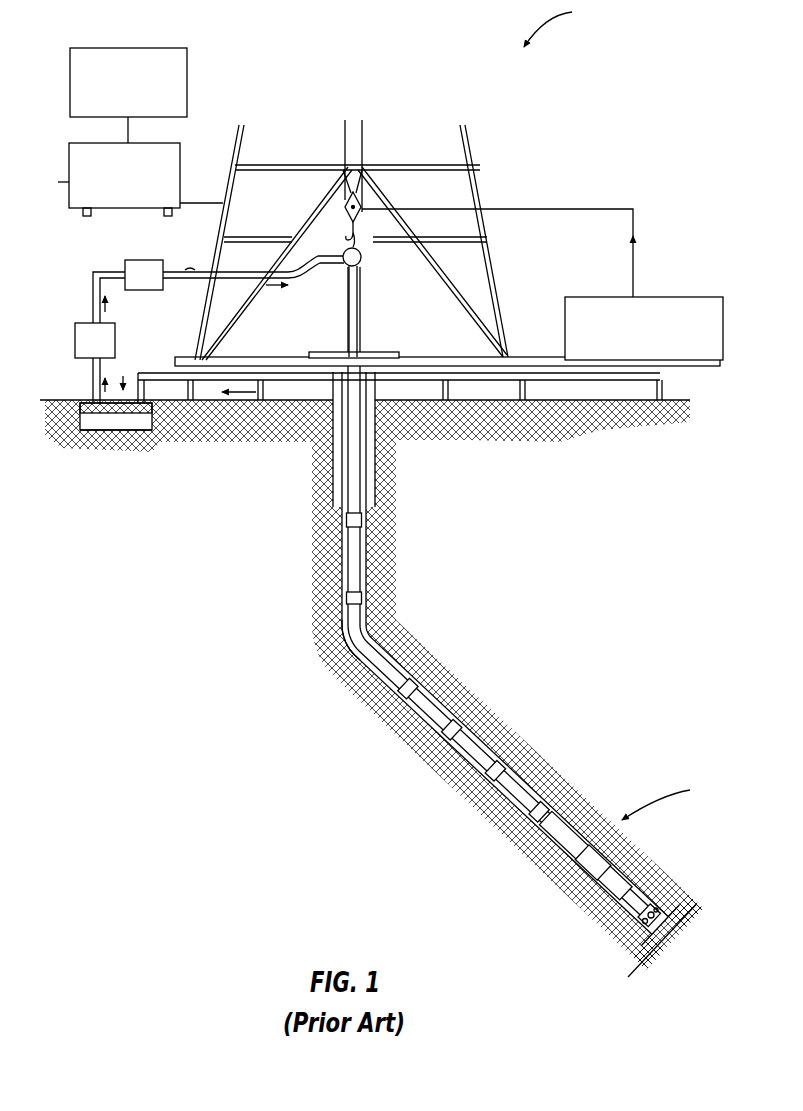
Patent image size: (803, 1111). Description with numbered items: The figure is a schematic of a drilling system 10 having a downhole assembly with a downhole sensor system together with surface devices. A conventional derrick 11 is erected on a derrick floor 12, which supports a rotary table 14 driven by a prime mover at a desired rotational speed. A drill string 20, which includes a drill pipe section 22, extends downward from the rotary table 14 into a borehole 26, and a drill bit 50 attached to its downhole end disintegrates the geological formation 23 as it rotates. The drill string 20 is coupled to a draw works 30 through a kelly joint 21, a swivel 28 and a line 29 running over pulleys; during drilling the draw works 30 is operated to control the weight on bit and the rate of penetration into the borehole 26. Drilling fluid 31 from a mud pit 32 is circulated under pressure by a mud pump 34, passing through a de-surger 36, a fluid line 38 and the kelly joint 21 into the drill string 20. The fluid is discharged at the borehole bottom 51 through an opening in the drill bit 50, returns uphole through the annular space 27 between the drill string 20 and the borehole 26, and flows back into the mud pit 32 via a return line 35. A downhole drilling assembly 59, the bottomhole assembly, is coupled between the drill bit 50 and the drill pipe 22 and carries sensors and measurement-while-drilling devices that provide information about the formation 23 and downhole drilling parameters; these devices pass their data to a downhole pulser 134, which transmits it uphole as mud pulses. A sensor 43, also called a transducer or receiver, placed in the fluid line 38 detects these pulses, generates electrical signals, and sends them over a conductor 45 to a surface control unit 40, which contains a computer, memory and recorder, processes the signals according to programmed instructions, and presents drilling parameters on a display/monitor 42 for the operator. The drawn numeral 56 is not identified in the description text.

The drilling system 10 is at (566, 26).
The derrick 11 is at (499, 268).
The derrick floor 12 is at (511, 357).
The rotary table 14 is at (324, 352).
The drill string 20 is at (488, 683).
The kelly joint 21 is at (361, 303).
The drill pipe section 22 is at (343, 590).
The geological formation 23 is at (672, 800).
The borehole 26 is at (360, 628).
The annular space 27 is at (545, 597).
The swivel 28 is at (334, 276).
The line 29 is at (363, 158).
The draw works 30 is at (664, 297).
The drilling fluid 31 is at (86, 432).
The mud pit 32 is at (138, 432).
The mud pump 34 is at (75, 340).
The return line 35 is at (215, 397).
The de-surger 36 is at (138, 260).
The fluid line 38 is at (183, 281).
The surface control unit 40 is at (180, 200).
The display/monitor 42 is at (133, 48).
The sensor 43 is at (189, 270).
The conductor 45 is at (223, 192).
The drill bit 50 is at (673, 910).
The borehole bottom 51 is at (641, 955).
The bottom hole assembly 56 is at (468, 727).
The downhole drilling assembly 59 is at (491, 655).
The downhole pulser 134 is at (478, 743).